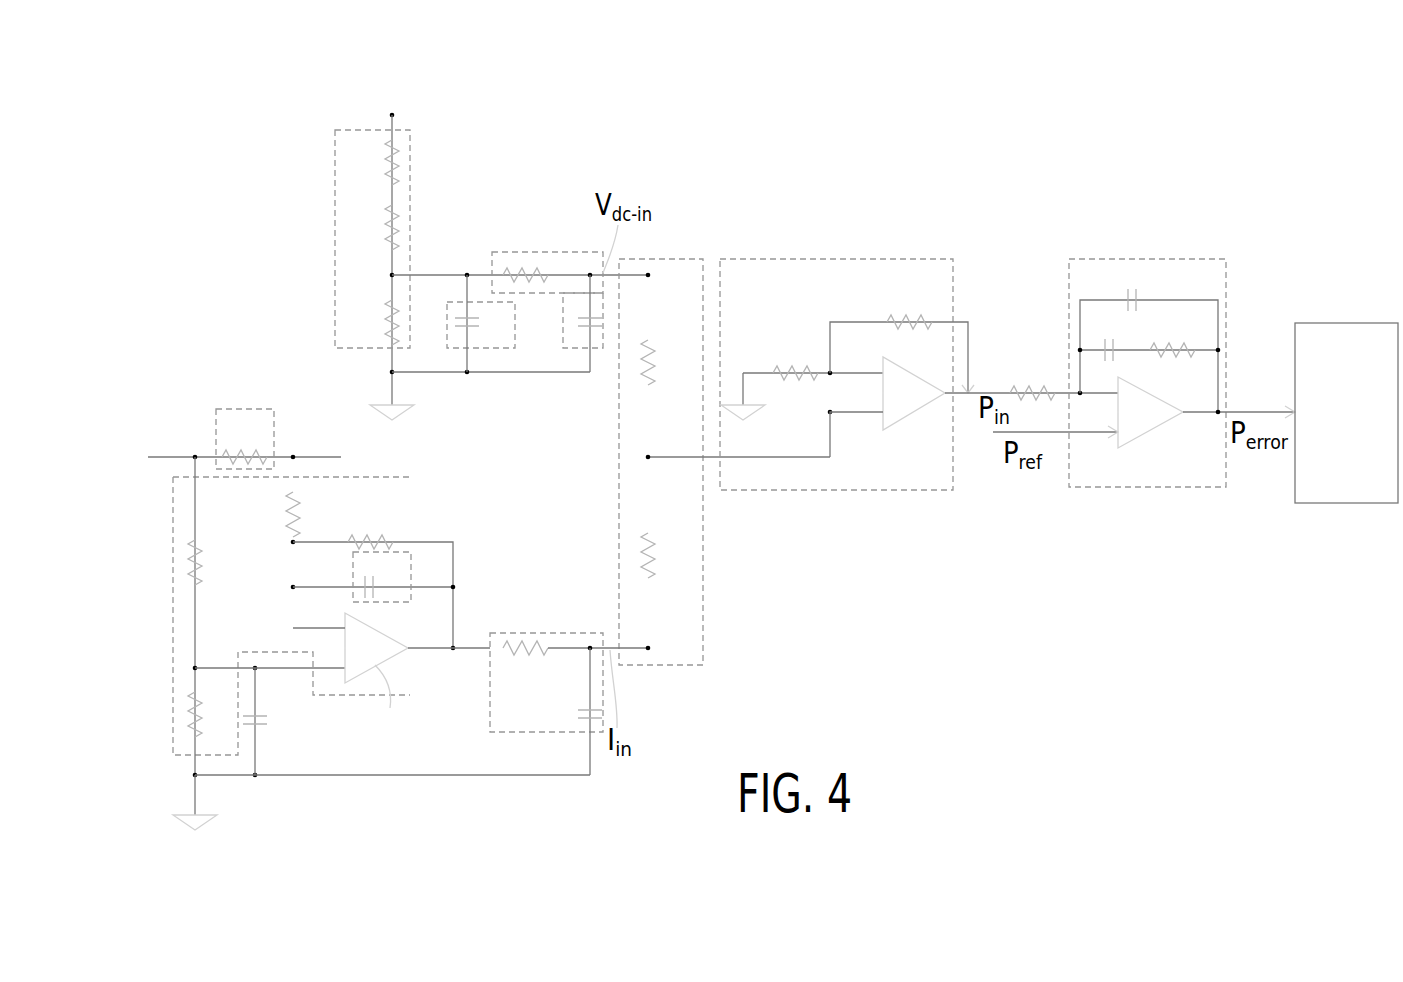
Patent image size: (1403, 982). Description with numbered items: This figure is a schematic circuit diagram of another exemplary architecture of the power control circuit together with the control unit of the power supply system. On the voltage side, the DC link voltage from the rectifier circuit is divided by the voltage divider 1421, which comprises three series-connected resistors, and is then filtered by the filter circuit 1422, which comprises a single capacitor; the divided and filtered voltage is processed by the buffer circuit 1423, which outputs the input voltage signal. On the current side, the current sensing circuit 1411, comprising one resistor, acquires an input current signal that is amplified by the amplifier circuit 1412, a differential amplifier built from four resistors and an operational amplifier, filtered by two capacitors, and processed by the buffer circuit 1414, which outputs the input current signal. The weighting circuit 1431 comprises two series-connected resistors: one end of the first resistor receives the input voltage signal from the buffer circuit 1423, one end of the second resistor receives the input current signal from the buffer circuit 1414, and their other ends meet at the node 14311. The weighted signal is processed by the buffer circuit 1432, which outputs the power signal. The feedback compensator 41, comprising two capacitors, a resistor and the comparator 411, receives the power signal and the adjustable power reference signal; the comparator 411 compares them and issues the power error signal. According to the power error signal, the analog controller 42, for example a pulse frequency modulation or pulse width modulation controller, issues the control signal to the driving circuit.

The voltage divider 1421 is at (335, 183).
The buffer circuit 1423 is at (537, 252).
The filter circuit 1422 is at (497, 348).
The current sensing circuit 1411 is at (245, 409).
The amplifier circuit 1412 is at (410, 505).
The buffer circuit 1414 is at (513, 633).
The weighting circuit 1431 is at (663, 262).
The node 14311 is at (650, 460).
The buffer circuit 1432 is at (835, 259).
The feedback compensator 41 is at (1182, 383).
The comparator 411 is at (1150, 433).
The analog controller 42 is at (1348, 323).